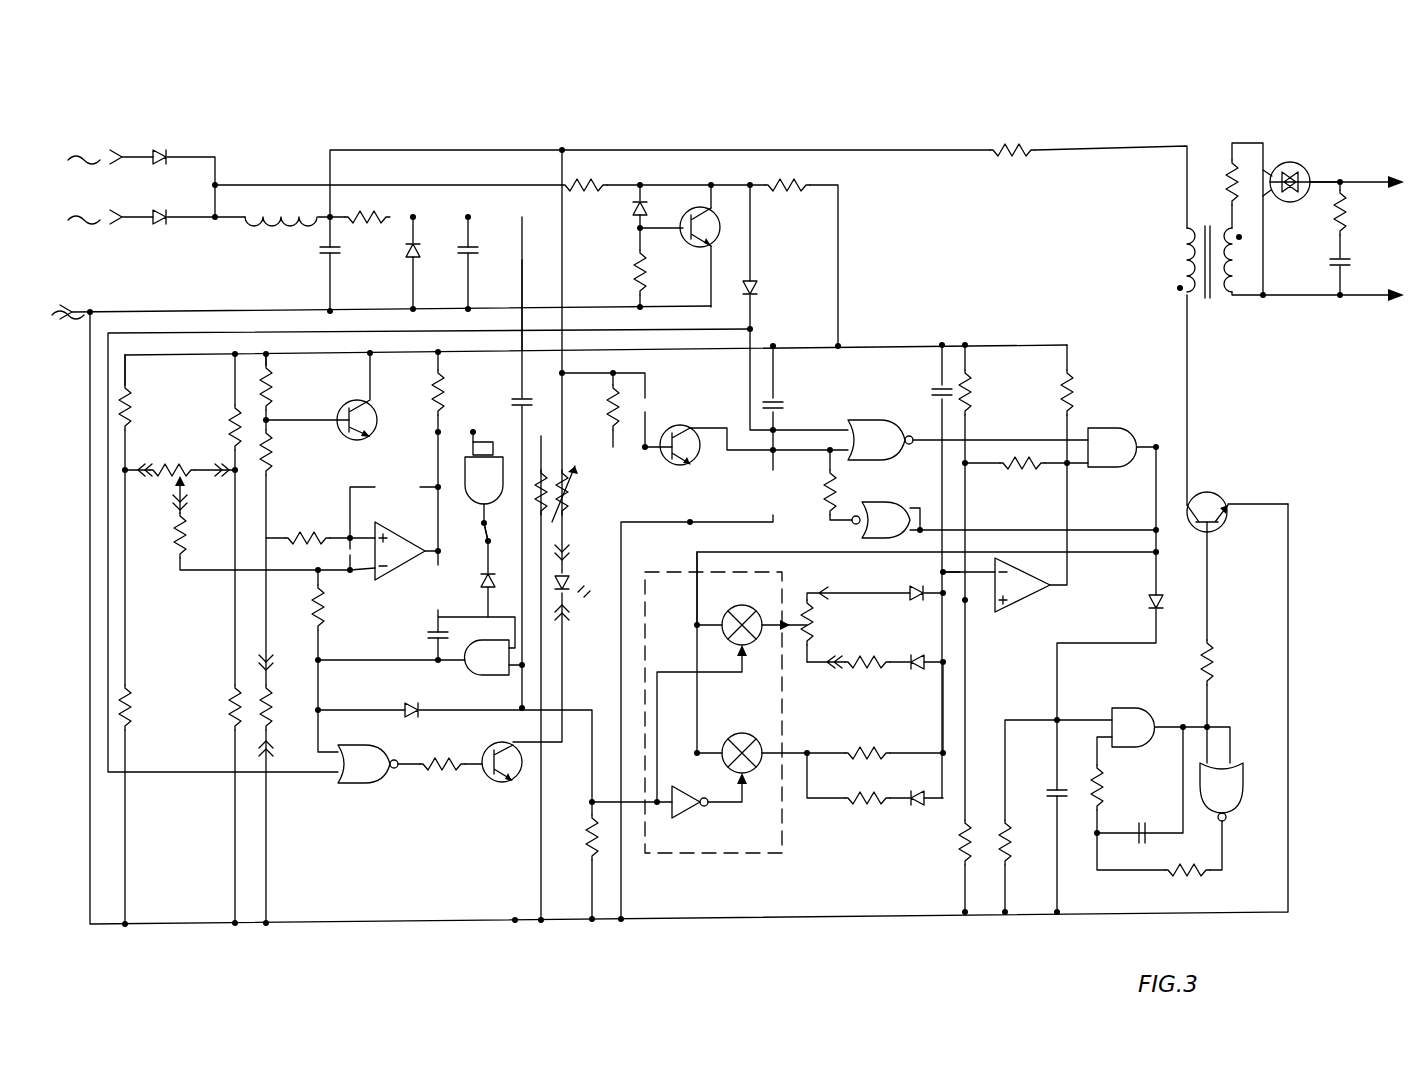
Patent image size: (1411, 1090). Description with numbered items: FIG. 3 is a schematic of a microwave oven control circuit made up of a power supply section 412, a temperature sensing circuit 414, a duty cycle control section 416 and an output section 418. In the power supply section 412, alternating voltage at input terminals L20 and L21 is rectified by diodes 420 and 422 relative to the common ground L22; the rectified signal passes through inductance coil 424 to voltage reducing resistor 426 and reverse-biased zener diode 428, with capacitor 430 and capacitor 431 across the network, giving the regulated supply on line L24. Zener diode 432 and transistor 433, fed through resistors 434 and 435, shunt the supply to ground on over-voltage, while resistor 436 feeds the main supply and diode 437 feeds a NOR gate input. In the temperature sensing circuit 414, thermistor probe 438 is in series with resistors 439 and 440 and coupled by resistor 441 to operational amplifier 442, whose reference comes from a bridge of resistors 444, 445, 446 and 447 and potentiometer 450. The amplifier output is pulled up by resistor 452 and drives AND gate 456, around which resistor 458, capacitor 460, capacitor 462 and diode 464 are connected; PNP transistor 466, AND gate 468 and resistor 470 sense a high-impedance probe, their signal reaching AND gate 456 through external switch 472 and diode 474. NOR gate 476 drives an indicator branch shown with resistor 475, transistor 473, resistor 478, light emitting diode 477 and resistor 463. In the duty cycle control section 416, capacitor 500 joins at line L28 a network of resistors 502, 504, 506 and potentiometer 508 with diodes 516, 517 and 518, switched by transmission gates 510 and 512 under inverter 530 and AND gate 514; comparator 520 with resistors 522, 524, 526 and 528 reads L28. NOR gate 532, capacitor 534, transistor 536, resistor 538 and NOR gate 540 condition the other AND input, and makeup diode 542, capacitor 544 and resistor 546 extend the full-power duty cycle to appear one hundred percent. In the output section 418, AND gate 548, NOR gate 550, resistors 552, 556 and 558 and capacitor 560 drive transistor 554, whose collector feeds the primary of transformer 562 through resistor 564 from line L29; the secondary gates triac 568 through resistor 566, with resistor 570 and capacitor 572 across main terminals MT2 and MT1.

The power supply section 412 is at (206, 226).
The temperature sensing circuit 414 is at (231, 421).
The duty cycle control section 416 is at (759, 573).
The output section 418 is at (1258, 470).
The diode 420 is at (163, 153).
The diode 422 is at (160, 243).
The inductance coil 424 is at (281, 249).
The resistor 426 is at (380, 212).
The zener diode 428 is at (406, 254).
The capacitor 430 is at (308, 264).
The capacitor 431 is at (460, 254).
The zener diode 432 is at (627, 218).
The transistor 433 is at (687, 243).
The resistor 434 is at (600, 182).
The resistor 435 is at (632, 267).
The resistor 436 is at (766, 190).
The diode 437 is at (761, 286).
The thermistor temperature probe 438 is at (274, 712).
The resistor 439 is at (272, 446).
The resistor 440 is at (271, 388).
The resistor 441 is at (322, 533).
The operational amplifier 442 is at (410, 535).
The resistor 444 is at (129, 406).
The resistor 445 is at (134, 698).
The resistor 446 is at (234, 421).
The resistor 447 is at (227, 714).
The potentiometer 450 is at (186, 466).
The resistor 452 is at (438, 389).
The AND gate 456 is at (494, 680).
The resistor 458 is at (326, 616).
The capacitor 460 is at (430, 636).
The capacitor 462 is at (516, 395).
The resistor 463 is at (594, 817).
The diode 464 is at (406, 702).
The transistor 466 is at (350, 406).
The AND gate 468 is at (460, 466).
The resistor 470 is at (564, 472).
The external switch 472 is at (483, 534).
The transistor 473 is at (488, 783).
The diode 474 is at (479, 588).
The resistor 475 is at (453, 774).
The NOR gate 476 is at (374, 745).
The light emitting diode 477 is at (570, 586).
The resistor 478 is at (574, 492).
The capacitor 500 is at (930, 388).
The resistor 502 is at (866, 802).
The resistor 504 is at (854, 752).
The resistor 506 is at (872, 662).
The potentiometer 508 is at (810, 634).
The bilateral semiconductor transmission gate 510 is at (752, 606).
The bilateral semiconductor transmission gate 512 is at (754, 733).
The AND gate 514 is at (1145, 426).
The diode 516 is at (914, 596).
The diode 517 is at (910, 707).
The diode 518 is at (916, 804).
The operational amplifier 520 is at (1028, 604).
The resistor 522 is at (961, 850).
The resistor 524 is at (972, 393).
The resistor 526 is at (1038, 469).
The resistor 528 is at (1071, 398).
The inverter 530 is at (686, 812).
The NOR gate 532 is at (898, 422).
The capacitor 534 is at (788, 407).
The transistor 536 is at (695, 464).
The resistor 538 is at (833, 482).
The NOR gate 540 is at (877, 502).
The diode 542 is at (1145, 600).
The capacitor 544 is at (613, 412).
The resistor 546 is at (1010, 855).
The AND gate 548 is at (1158, 708).
The NOR gate 550 is at (1236, 794).
The resistor 552 is at (1218, 664).
The transistor 554 is at (1221, 498).
The resistor 556 is at (1184, 878).
The resistor 558 is at (1102, 779).
The capacitor 560 is at (1160, 824).
The transformer 562 is at (1208, 300).
The resistor 564 is at (1030, 156).
The resistor 566 is at (1227, 167).
The triac 568 is at (1299, 170).
The resistor 570 is at (1346, 230).
The capacitor 572 is at (1332, 264).
The input terminal L20 is at (125, 155).
The input terminal L21 is at (145, 213).
The input terminal L22 is at (70, 310).
The regulated voltage supply line L24 is at (522, 284).
The R-C circuit output line L28 is at (943, 574).
The voltage source line L29 is at (330, 217).
The main terminal MT1 is at (1275, 196).
The main terminal MT2 is at (1310, 184).